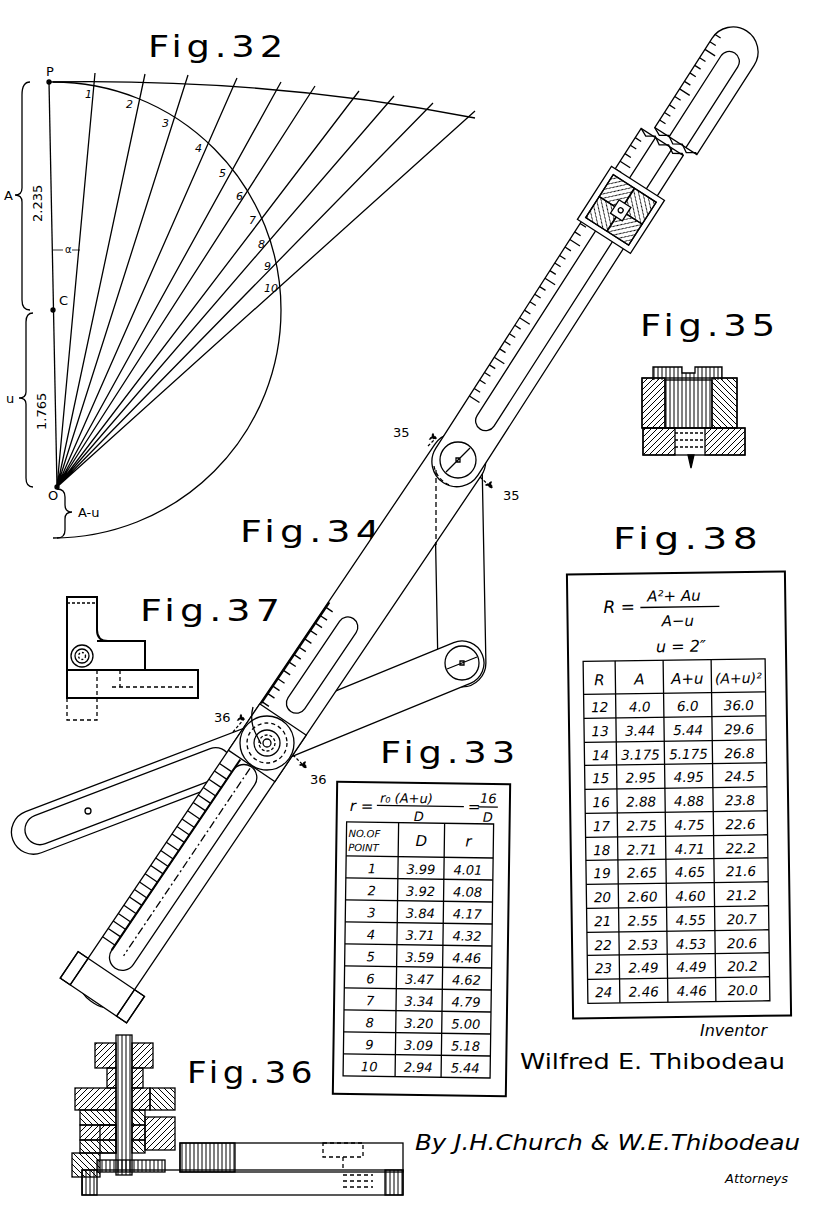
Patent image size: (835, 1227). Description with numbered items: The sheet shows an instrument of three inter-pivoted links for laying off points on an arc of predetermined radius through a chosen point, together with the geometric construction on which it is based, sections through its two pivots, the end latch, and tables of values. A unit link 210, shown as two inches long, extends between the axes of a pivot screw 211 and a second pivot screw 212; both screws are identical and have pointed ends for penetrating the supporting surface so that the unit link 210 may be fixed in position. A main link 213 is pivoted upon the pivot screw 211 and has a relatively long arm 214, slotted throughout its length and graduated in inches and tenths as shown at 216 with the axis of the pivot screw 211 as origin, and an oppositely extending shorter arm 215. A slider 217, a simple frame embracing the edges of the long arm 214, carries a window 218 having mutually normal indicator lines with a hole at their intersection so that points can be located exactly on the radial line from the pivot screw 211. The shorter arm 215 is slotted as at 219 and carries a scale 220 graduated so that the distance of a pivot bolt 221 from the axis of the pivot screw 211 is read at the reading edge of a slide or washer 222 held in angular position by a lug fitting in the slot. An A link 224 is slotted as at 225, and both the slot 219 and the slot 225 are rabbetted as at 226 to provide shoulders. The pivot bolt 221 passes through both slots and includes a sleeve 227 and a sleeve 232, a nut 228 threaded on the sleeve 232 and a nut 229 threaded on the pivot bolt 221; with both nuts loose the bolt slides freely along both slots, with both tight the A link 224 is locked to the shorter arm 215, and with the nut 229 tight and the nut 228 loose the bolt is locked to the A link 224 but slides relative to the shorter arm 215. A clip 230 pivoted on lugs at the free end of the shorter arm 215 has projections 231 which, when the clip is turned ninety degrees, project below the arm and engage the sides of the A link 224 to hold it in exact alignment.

In FIG. 34, the unit link 210 is at (480, 570).
In FIG. 35, the unit link 210 is at (723, 456).
In FIG. 36, the unit link 210 is at (242, 1182).
In FIG. 34, the pivot screw 211 is at (478, 459).
In FIG. 35, the pivot screw 211 is at (706, 370).
In FIG. 34, the second pivot screw 212 is at (481, 664).
In FIG. 36, the second pivot screw 212 is at (338, 1142).
In FIG. 34, the main link 213 is at (553, 373).
In FIG. 35, the main link 213 is at (739, 386).
In FIG. 36, the main link 213 is at (178, 1137).
In FIG. 34, the long arm 214 is at (671, 176).
In FIG. 34, the shorter arm 215 is at (248, 833).
In FIG. 37, the shorter arm 215 is at (146, 692).
In FIG. 36, the shorter arm 215 is at (80, 1131).
In FIG. 34, the graduations 216 is at (548, 297).
In FIG. 34, the slider 217 is at (636, 254).
In FIG. 34, the window 218 is at (645, 213).
In FIG. 34, the slot 219 is at (166, 938).
In FIG. 36, the slot 219 is at (80, 1147).
In FIG. 34, the scale 220 is at (143, 886).
In FIG. 34, the pivot bolt 221 is at (256, 711).
In FIG. 36, the pivot bolt 221 is at (129, 1040).
In FIG. 34, the slide or washer 222 is at (284, 772).
In FIG. 36, the slide or washer 222 is at (80, 1117).
In FIG. 34, the A link 224 is at (424, 698).
In FIG. 36, the A link 224 is at (257, 1144).
In FIG. 34, the slot 225 is at (88, 809).
In FIG. 36, the slot 225 is at (166, 1172).
In FIG. 34, the rabbet 226 is at (145, 782).
In FIG. 36, the rabbet 226 is at (80, 1152).
In FIG. 36, the sleeve 227 is at (75, 1176).
In FIG. 34, the nut 228 is at (241, 741).
In FIG. 36, the nut 228 is at (77, 1092).
In FIG. 34, the nut 229 is at (300, 750).
In FIG. 36, the nut 229 is at (152, 1048).
In FIG. 34, the clip 230 is at (93, 998).
In FIG. 37, the clip 230 is at (70, 617).
In FIG. 34, the projections 231 is at (90, 968).
In FIG. 37, the projections 231 is at (140, 651).
In FIG. 36, the sleeve 232 is at (176, 1118).